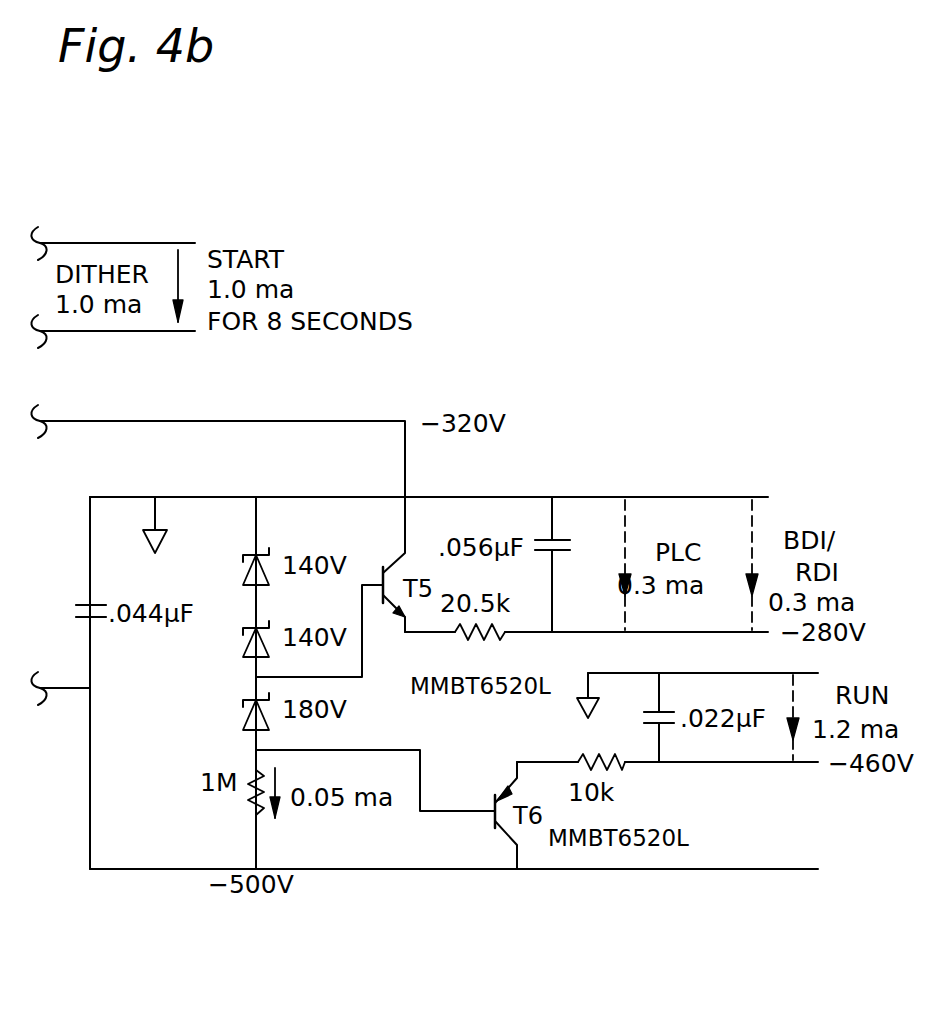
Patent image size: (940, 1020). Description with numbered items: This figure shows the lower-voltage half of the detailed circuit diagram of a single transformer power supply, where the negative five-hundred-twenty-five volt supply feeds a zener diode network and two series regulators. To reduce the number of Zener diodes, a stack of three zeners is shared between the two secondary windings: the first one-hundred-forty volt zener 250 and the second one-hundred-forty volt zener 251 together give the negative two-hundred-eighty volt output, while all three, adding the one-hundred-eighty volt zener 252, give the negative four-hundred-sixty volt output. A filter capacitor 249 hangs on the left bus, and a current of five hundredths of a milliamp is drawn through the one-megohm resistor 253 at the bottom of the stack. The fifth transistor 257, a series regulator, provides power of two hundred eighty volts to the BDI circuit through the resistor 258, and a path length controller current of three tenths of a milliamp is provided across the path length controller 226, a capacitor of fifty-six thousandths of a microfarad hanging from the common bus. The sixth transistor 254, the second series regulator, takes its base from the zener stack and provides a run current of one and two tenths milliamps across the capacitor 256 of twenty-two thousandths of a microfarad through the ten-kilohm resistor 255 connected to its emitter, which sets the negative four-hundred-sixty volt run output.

The path length controller 226 is at (572, 548).
The capacitor .044 uF 249 is at (84, 612).
The zener diode 140V 250 is at (243, 571).
The zener diode 140V 251 is at (243, 643).
The zener diode 180V 252 is at (243, 715).
The resistor 1M 253 is at (252, 814).
The transistor T6 254 is at (490, 785).
The resistor of 10K ohms 255 is at (622, 766).
The capacitor 256 is at (646, 718).
The transistor T5 257 is at (392, 565).
The resistor 258 is at (465, 640).